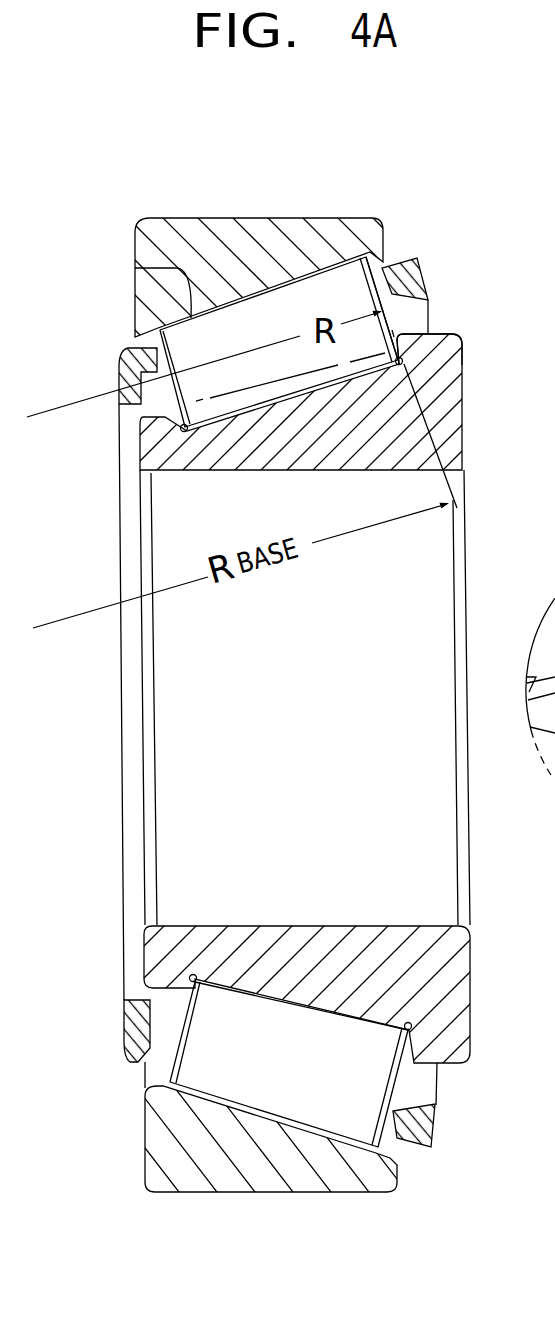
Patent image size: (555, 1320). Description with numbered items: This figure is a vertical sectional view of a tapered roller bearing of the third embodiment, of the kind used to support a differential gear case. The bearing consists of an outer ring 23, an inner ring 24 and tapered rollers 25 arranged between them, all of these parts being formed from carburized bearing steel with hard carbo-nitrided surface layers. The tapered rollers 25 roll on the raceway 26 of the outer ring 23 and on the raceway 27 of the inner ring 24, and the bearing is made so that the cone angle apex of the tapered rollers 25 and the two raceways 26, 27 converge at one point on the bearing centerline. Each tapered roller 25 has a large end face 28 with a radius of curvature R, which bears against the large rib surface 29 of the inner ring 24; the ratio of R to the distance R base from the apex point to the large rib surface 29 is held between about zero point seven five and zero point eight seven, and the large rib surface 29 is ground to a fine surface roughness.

The outer ring 23 is at (273, 242).
The inner ring 24 is at (224, 468).
The tapered rollers 25 is at (135, 298).
The raceway of the outer ring 26 is at (339, 262).
The raceway of the inner ring 27 is at (402, 363).
The large end faces 28 is at (392, 300).
The large rib surface 29 is at (393, 333).